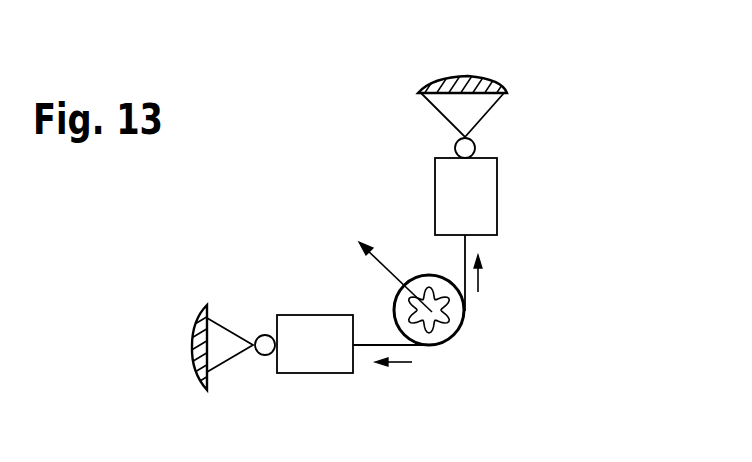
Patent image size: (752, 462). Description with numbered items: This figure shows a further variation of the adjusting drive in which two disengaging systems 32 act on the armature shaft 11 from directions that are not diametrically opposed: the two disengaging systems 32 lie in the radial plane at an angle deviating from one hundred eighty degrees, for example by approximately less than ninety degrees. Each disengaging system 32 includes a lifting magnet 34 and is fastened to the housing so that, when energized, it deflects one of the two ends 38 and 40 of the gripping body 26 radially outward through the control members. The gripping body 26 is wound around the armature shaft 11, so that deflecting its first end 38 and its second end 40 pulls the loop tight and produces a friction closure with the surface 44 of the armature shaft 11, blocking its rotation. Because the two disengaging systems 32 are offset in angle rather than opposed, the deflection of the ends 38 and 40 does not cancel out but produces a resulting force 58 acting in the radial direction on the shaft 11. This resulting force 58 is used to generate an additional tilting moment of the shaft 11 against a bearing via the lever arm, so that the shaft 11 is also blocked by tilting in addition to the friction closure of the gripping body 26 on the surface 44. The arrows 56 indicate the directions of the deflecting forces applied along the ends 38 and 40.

The armature shaft 11 is at (447, 316).
The gripping body 26 is at (460, 360).
The disengaging system 32 is at (311, 367).
The lifting magnet 34 is at (485, 192).
The first end of gripping body 38 is at (366, 348).
The second end of gripping body 40 is at (465, 245).
The surface of the armature shaft 44 is at (400, 296).
The direction of rotation arrow 56 is at (478, 280).
The resulting radial force 58 is at (383, 258).